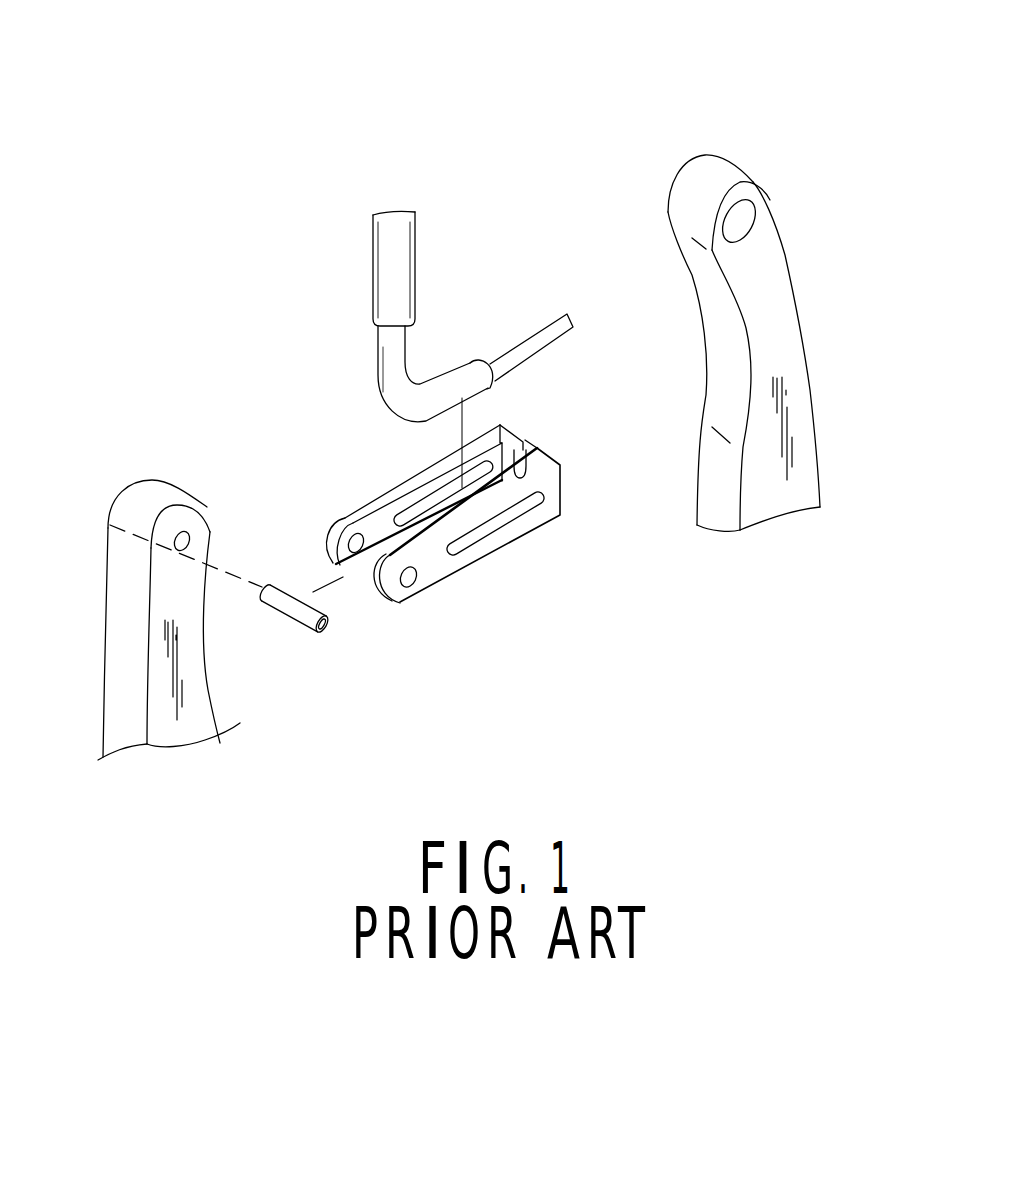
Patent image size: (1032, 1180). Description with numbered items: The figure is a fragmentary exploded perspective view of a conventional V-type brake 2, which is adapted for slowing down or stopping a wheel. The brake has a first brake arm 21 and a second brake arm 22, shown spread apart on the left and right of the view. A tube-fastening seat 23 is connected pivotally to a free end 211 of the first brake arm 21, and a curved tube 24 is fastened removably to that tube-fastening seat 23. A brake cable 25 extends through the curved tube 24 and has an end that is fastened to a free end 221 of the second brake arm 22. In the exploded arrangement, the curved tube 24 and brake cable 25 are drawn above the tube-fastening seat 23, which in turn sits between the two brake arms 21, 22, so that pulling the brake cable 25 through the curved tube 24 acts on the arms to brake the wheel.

The V-type brake 2 is at (630, 138).
The first brake arm 21 is at (102, 638).
The free end of the first brake arm 211 is at (200, 511).
The second brake arm 22 is at (797, 307).
The free end of the second brake arm 221 is at (753, 190).
The tube-fastening seat 23 is at (491, 554).
The curved tube 24 is at (443, 375).
The brake cable 25 is at (547, 322).